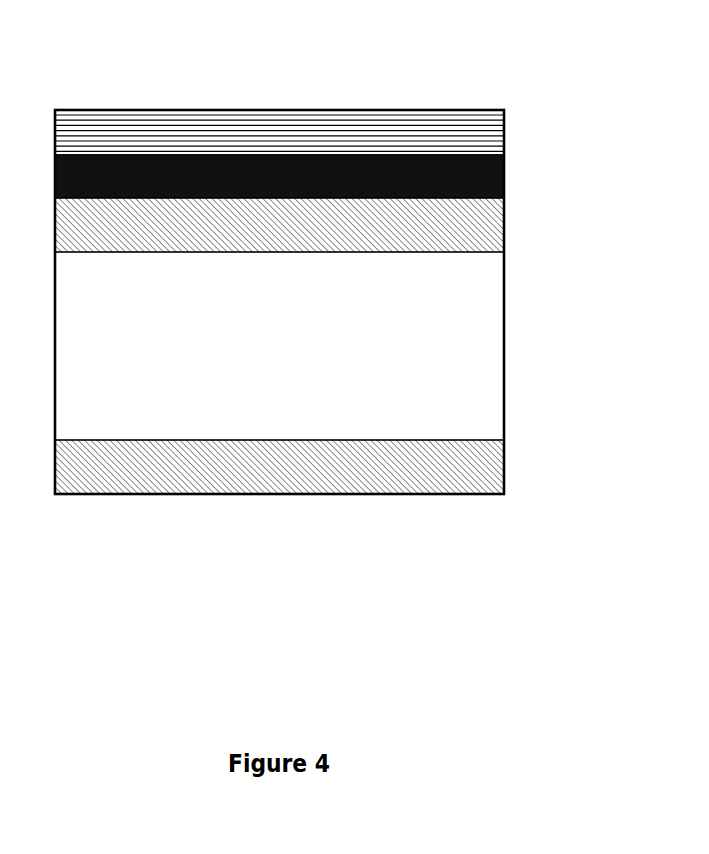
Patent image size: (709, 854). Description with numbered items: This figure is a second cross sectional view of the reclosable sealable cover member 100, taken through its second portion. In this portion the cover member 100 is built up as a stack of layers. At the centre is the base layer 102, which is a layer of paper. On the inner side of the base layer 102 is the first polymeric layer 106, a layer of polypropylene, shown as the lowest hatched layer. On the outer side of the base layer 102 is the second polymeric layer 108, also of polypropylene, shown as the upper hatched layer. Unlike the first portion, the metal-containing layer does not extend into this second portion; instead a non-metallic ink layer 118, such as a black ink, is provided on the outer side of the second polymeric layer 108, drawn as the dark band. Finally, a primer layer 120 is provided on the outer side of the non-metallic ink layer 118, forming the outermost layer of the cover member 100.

The reclosable sealable cover member 100 is at (313, 561).
The base layer 102 is at (475, 346).
The first polymeric layer 106 is at (503, 470).
The second polymeric layer 108 is at (505, 233).
The non-metallic ink layer 118 is at (505, 178).
The primer layer 120 is at (405, 109).